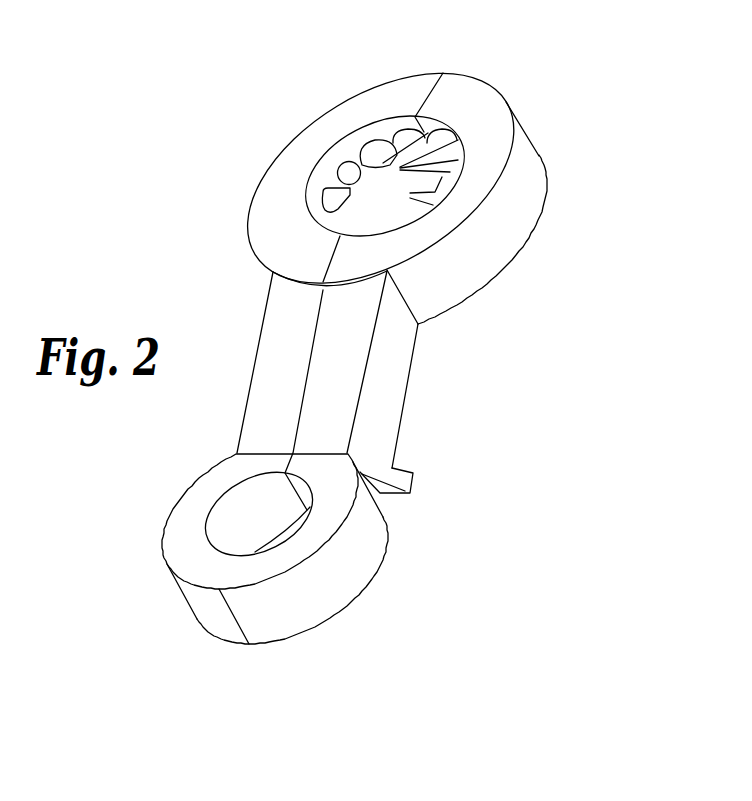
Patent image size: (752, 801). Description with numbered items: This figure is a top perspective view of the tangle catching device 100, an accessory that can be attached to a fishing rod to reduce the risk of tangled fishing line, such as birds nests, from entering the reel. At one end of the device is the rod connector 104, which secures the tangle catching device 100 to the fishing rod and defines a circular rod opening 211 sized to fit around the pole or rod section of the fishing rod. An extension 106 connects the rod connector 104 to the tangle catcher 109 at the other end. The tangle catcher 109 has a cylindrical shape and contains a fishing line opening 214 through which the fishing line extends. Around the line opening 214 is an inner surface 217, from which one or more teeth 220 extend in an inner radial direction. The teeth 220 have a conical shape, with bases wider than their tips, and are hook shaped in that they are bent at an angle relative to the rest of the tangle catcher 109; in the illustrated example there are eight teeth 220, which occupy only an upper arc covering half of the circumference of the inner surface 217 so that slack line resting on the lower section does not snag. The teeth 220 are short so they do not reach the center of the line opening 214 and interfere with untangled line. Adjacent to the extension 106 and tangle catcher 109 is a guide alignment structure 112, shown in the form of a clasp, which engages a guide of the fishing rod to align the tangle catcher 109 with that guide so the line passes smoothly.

The tangle catching device 100 is at (227, 86).
The rod connector 104 is at (340, 573).
The extension 106 is at (345, 372).
The tangle catcher 109 is at (527, 177).
The guide alignment structure 112 is at (438, 484).
The rod opening 211 is at (253, 520).
The fishing line opening 214 is at (377, 220).
The inner surface 217 is at (327, 220).
The teeth 220 is at (400, 147).